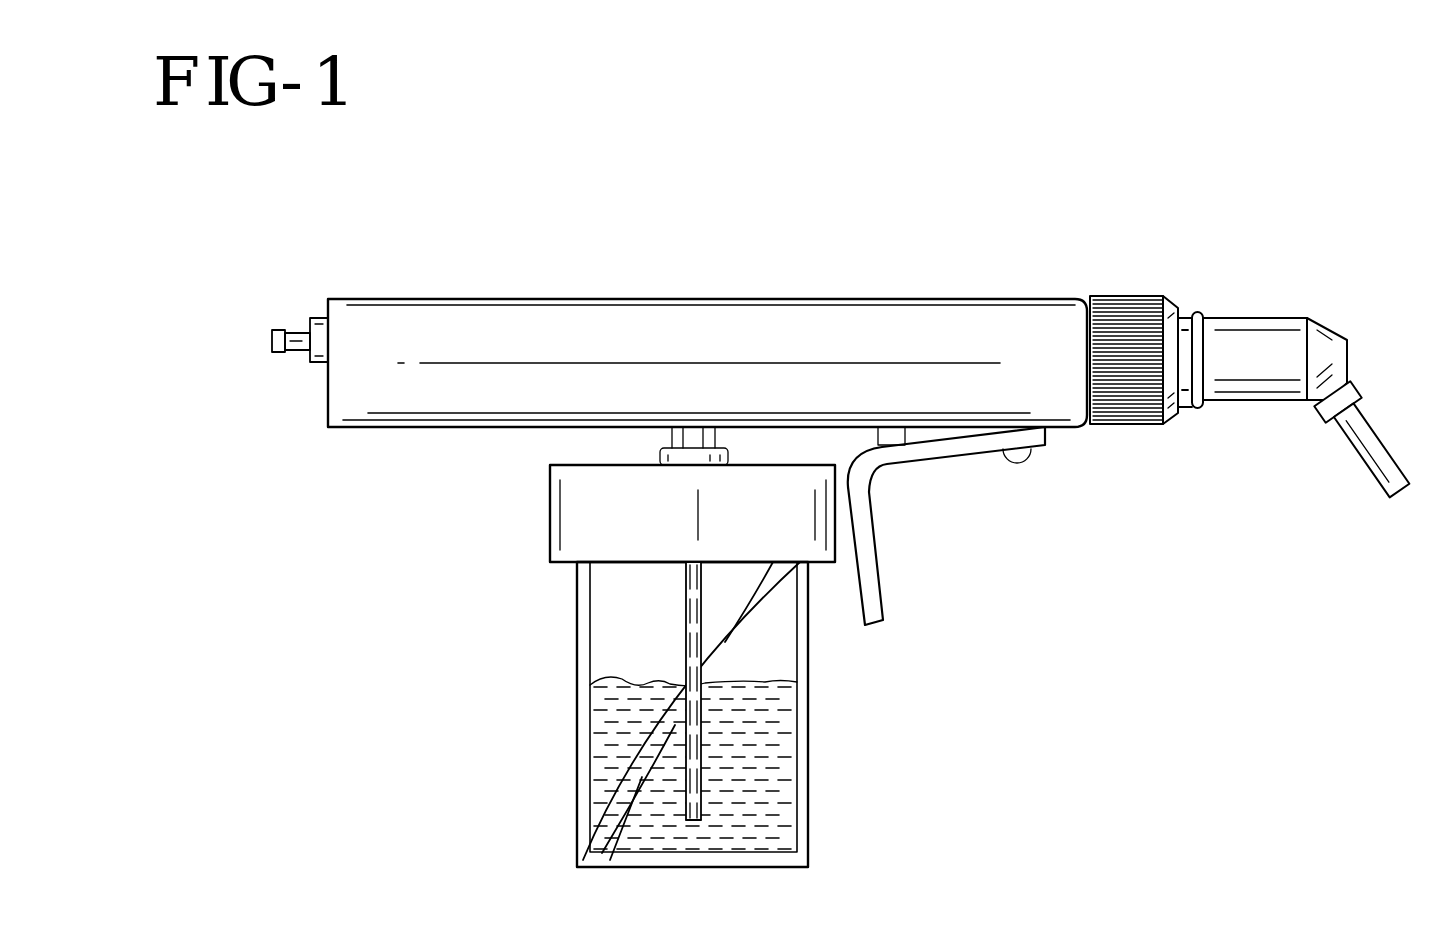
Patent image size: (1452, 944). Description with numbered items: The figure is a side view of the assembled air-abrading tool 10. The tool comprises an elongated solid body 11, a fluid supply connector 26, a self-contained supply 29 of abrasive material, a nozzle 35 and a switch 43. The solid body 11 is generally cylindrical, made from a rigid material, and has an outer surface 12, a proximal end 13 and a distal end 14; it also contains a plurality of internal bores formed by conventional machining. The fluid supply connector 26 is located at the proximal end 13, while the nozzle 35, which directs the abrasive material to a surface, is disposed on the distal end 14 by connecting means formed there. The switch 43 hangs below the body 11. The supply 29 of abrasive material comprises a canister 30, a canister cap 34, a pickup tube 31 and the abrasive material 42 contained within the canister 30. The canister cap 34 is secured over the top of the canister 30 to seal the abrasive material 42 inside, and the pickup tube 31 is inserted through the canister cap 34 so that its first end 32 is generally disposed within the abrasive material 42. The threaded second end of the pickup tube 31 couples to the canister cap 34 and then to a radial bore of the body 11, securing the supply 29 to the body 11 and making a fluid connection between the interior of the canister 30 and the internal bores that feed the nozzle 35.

The air-abrading tool 10 is at (694, 168).
The solid body 11 is at (413, 327).
The outer surface 12 is at (848, 297).
The proximal end 13 is at (328, 384).
The distal end 14 is at (1078, 322).
The fluid supply connector 26 is at (281, 330).
The supply of abrasive material 29 is at (340, 879).
The canister 30 is at (810, 745).
The pickup tube 31 is at (688, 633).
The first end 32 is at (690, 820).
The canister cap 34 is at (550, 513).
The nozzle 35 is at (1194, 327).
The abrasive material 42 is at (738, 783).
The switch 43 is at (868, 660).